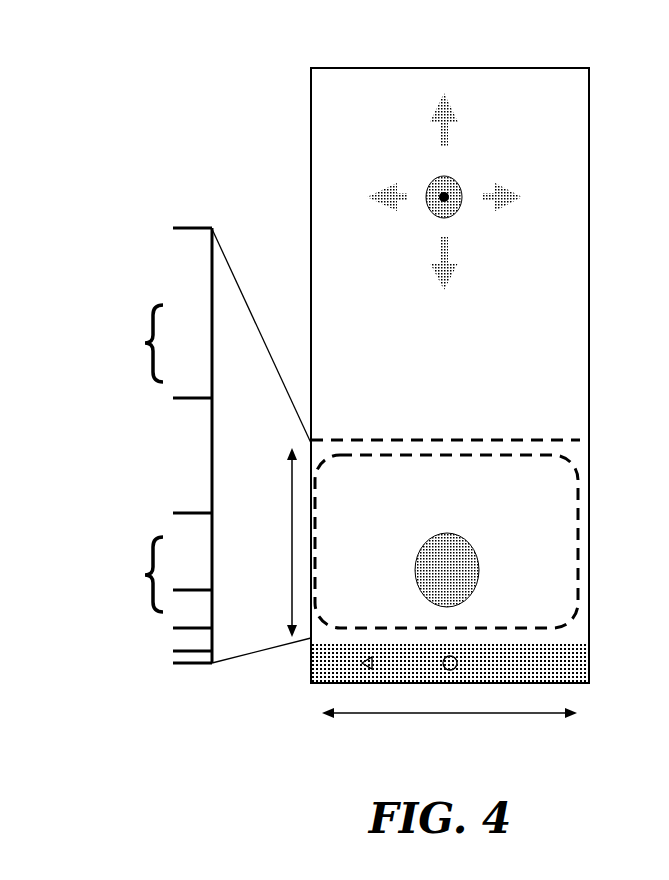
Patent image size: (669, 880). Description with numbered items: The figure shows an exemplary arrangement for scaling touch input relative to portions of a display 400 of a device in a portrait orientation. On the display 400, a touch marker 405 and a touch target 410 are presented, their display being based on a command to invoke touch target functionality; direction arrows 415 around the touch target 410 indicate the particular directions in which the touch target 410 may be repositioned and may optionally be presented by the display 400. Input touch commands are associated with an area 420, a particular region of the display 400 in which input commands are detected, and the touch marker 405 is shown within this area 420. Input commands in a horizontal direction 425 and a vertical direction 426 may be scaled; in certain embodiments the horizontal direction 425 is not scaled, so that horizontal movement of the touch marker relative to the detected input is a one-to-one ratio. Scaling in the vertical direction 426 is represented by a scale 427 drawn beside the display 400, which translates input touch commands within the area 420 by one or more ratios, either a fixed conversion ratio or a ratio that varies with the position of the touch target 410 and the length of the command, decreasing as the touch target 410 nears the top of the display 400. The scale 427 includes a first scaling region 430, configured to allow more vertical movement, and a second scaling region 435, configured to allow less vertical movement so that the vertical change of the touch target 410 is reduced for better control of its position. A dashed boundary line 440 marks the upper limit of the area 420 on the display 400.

The display 400 is at (272, 84).
The touch marker 405 is at (472, 547).
The touch target 410 is at (463, 187).
The direction arrows 415 is at (457, 128).
The area 420 is at (568, 527).
The horizontal direction 425 is at (449, 729).
The vertical direction 426 is at (268, 542).
The scale 427 is at (200, 227).
The first scaling region 430 is at (129, 543).
The second scaling region 435 is at (118, 302).
The region boundary line 440 is at (515, 438).